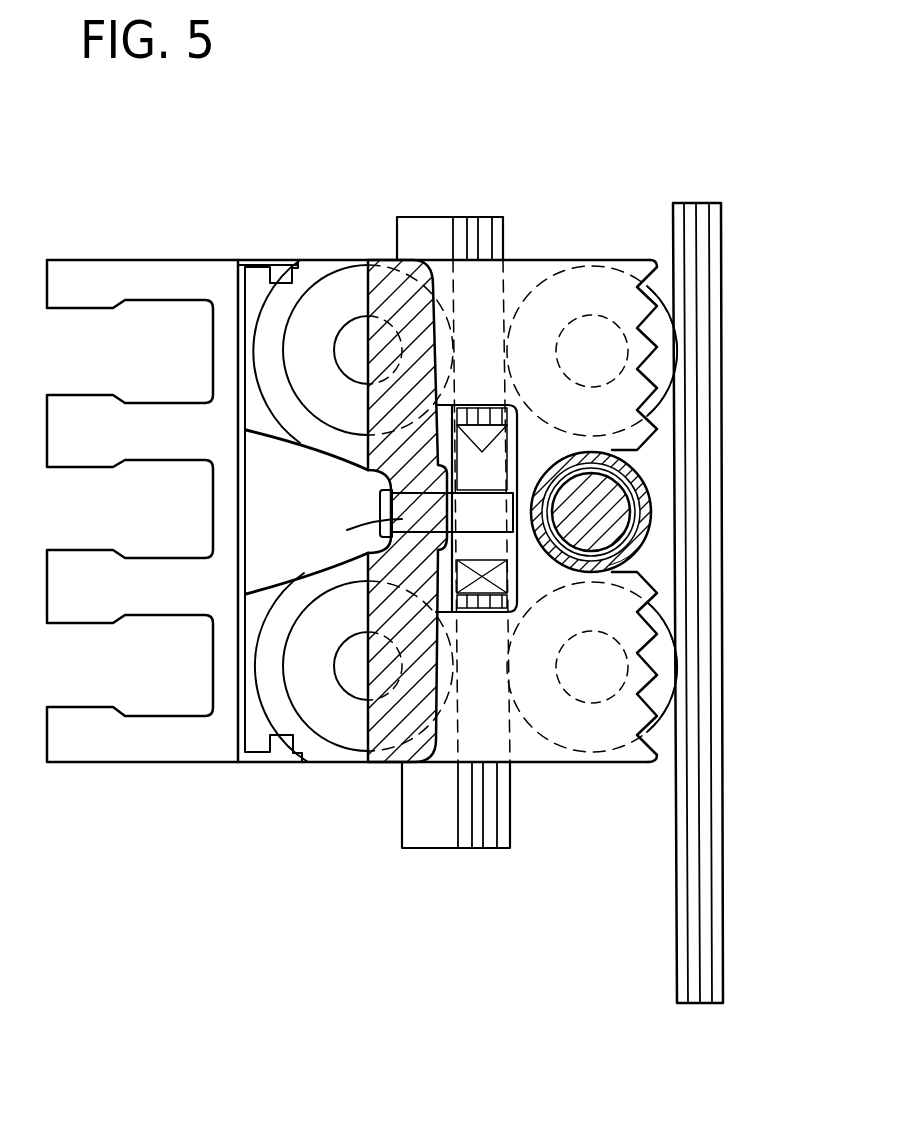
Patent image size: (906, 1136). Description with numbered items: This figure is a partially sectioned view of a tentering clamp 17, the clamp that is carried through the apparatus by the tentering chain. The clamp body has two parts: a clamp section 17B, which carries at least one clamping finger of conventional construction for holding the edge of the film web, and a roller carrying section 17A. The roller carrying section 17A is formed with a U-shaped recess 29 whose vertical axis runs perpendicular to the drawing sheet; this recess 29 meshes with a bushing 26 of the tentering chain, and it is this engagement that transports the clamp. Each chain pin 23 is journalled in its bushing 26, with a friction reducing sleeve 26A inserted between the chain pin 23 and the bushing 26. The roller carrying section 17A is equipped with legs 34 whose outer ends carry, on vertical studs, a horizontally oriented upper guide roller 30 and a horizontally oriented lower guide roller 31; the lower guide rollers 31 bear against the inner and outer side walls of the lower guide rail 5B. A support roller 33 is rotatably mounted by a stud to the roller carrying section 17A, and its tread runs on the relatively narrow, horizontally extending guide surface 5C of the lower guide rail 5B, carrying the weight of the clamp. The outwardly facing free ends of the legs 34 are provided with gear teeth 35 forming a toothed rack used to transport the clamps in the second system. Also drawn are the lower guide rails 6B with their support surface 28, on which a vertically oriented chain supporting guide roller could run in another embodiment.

The tentering clamp 17 is at (140, 836).
The roller carrying section 17A is at (385, 763).
The clamp section 17B is at (193, 745).
The upper guide rollers 30 is at (320, 300).
The lower guide rail 5B is at (410, 228).
The guide surface 5C is at (480, 848).
The legs 34 is at (517, 275).
The lower guide rollers 31 is at (663, 366).
The gear teeth 35 is at (648, 324).
The lower guide rails 6B is at (718, 418).
The support surface 28 is at (703, 452).
The bushing 26 is at (638, 483).
The friction reducing sleeves 26A is at (633, 517).
The chain pins 23 is at (603, 538).
The U-shaped recess 29 is at (643, 568).
The support roller 33 is at (500, 487).